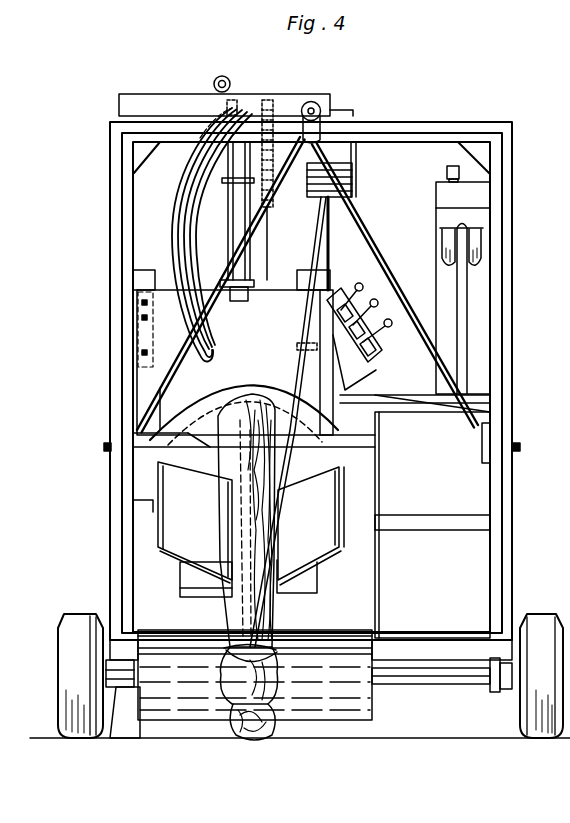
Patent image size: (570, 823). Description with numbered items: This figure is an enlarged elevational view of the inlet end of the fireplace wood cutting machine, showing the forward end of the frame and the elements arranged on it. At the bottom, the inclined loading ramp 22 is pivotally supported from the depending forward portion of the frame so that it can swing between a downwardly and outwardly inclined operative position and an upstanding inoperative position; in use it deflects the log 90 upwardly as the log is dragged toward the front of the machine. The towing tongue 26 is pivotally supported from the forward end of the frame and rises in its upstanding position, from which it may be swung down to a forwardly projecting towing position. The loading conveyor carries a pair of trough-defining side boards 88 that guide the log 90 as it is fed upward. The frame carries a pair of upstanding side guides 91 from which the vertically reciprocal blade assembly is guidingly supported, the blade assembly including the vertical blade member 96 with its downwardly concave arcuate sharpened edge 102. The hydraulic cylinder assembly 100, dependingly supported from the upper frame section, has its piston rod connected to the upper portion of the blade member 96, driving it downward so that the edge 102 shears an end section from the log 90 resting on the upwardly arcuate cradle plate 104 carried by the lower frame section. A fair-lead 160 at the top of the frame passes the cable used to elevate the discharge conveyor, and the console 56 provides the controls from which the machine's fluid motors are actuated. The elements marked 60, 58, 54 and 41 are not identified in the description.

The fair-lead 160 is at (222, 76).
The hydraulic cylinder assembly 100 is at (223, 207).
The towing tongue 26 is at (381, 245).
The side guides 91 is at (325, 257).
The hooks 60 is at (480, 247).
The rod 58 is at (470, 306).
The cabinet 54 is at (483, 343).
The arcuate sharpened edge 102 is at (228, 384).
The console 56 is at (366, 372).
The vertical blade member 96 is at (159, 389).
The cradle plate 104 is at (163, 438).
The side boards 88 is at (180, 517).
The loading ramp 22 is at (340, 695).
The axle 41 is at (443, 687).
The log 90 is at (262, 738).